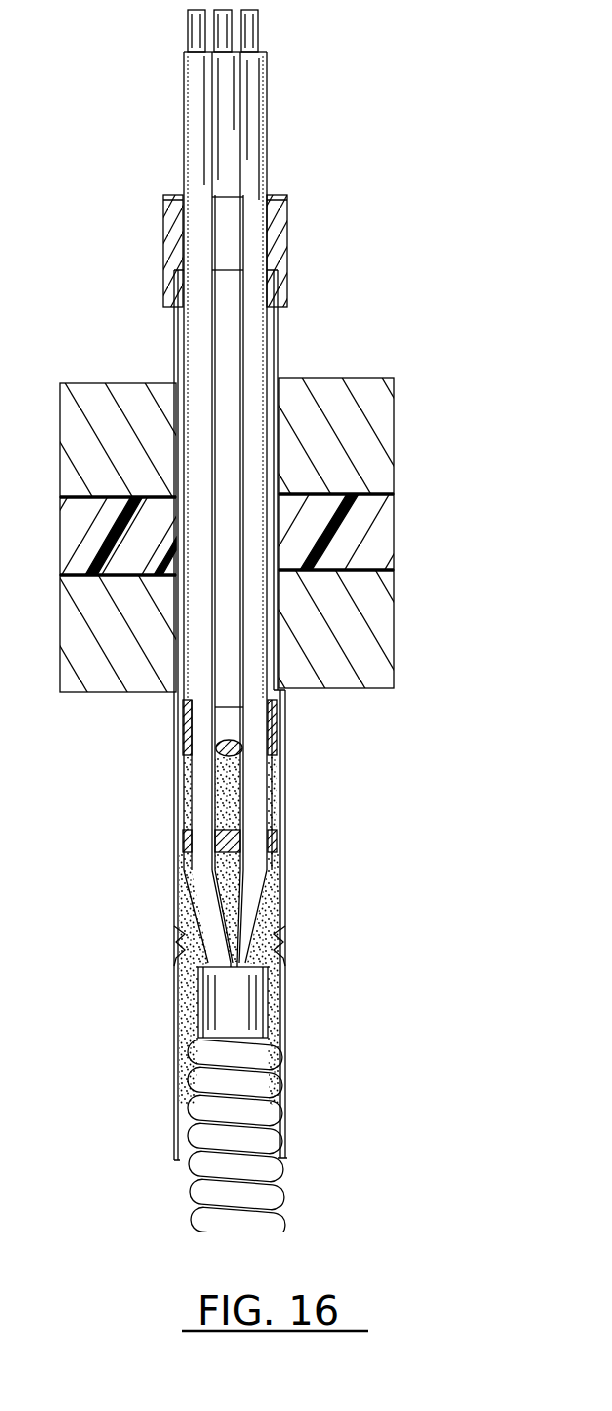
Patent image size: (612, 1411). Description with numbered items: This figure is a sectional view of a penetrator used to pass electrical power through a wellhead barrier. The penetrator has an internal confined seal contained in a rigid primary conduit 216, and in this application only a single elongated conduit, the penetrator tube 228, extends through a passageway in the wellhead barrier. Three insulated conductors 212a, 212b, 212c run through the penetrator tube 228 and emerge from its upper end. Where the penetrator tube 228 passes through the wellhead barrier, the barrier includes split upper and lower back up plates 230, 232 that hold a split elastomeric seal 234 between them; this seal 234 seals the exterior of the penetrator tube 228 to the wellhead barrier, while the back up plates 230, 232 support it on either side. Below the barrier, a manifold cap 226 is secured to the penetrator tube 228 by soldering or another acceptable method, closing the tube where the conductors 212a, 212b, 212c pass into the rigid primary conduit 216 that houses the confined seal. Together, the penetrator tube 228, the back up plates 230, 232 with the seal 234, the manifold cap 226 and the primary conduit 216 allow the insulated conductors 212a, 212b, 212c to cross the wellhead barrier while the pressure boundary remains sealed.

The insulated conductor 212a is at (205, 154).
The insulated conductor 212b is at (222, 85).
The insulated conductor 212c is at (256, 102).
The penetrator tube 228 is at (277, 348).
The upper back up plate 230 is at (395, 445).
The split elastomeric seal 234 is at (384, 545).
The lower back up plate 232 is at (396, 652).
The manifold cap 226 is at (279, 717).
The rigid primary conduit 216 is at (289, 818).